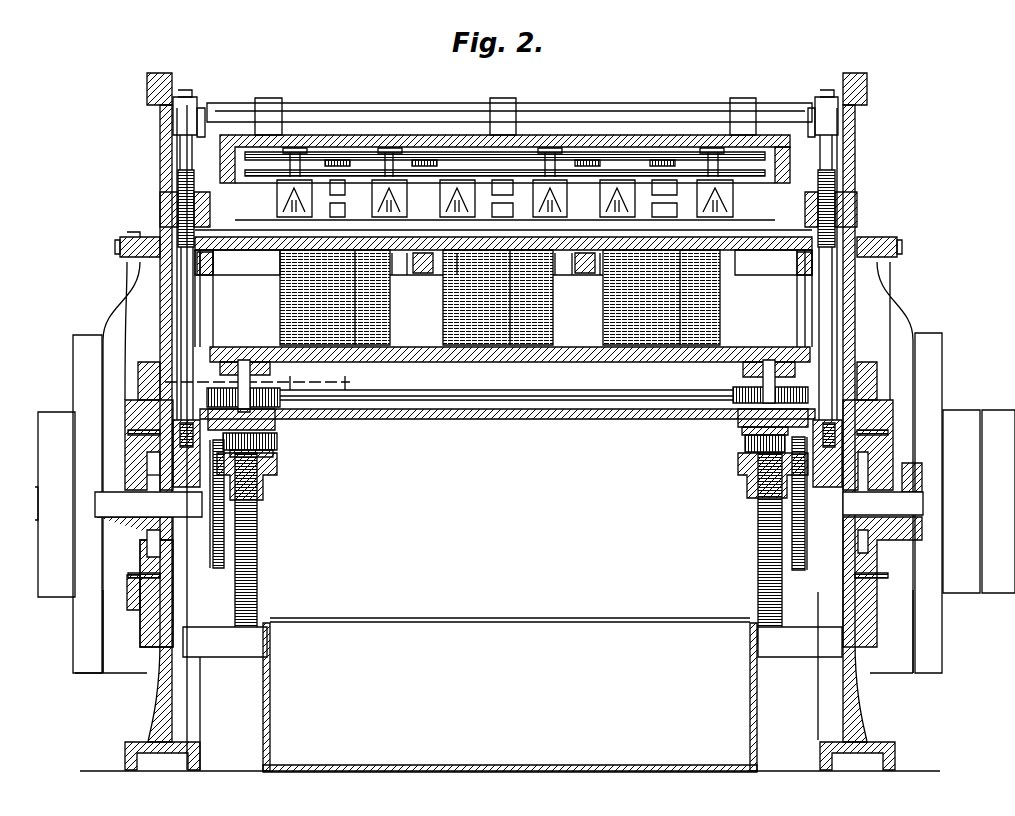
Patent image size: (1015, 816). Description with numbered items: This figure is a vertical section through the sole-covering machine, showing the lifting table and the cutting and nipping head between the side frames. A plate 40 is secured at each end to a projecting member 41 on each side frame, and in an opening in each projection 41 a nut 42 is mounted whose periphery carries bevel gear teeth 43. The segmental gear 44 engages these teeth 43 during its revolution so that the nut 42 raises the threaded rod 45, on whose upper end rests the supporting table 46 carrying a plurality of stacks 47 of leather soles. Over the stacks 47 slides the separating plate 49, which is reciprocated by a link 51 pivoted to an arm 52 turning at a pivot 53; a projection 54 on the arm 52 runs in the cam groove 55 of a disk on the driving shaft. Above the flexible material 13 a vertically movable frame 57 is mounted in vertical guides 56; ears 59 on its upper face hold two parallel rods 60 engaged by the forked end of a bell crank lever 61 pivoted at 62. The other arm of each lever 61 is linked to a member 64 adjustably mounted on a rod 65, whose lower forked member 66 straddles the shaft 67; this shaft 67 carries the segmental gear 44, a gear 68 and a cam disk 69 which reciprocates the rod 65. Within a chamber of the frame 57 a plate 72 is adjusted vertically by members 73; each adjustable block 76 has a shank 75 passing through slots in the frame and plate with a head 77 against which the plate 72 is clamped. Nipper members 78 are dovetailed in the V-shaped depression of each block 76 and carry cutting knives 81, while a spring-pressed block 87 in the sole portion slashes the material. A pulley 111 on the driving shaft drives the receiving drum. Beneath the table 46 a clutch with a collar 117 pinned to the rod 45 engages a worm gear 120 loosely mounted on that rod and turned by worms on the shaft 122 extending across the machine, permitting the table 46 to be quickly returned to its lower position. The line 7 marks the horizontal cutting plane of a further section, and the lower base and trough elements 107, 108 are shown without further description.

The cutting plane line 7— 7 is at (155, 360).
The flexible material 13 is at (255, 240).
The plate 40 is at (468, 420).
The projecting member 41 is at (278, 470).
The nut 42 is at (275, 453).
The bevel gear teeth 43 is at (278, 440).
The segmental gear 44 is at (226, 555).
The threaded rod 45 is at (258, 535).
The supporting table 46 is at (392, 362).
The stacks of leather soles 47 is at (280, 285).
The separating plate 49 is at (755, 250).
The link 51 is at (150, 237).
The arm 52 is at (128, 300).
The pivot 53 is at (216, 648).
The projection 54 is at (805, 550).
The cam groove 55 is at (920, 465).
The vertical guides 56 is at (78, 336).
The vertically movable frame 57 is at (578, 148).
The ears 59 is at (268, 100).
The parallel rods 60 is at (302, 102).
The bell crank lever 61 is at (186, 97).
The pivot 62 is at (204, 110).
The member 64 is at (170, 195).
The rod 65 is at (182, 300).
The forked member 66 is at (128, 595).
The shaft 67 is at (102, 505).
The gear 68 is at (128, 438).
The cam disk 69 is at (145, 378).
The plate 72 is at (340, 155).
The adjusting members 73 is at (248, 170).
The shank 75 is at (395, 160).
The adjustable block 76 is at (280, 188).
The head 77 is at (385, 150).
The nipper member 78 is at (466, 210).
The cutting knives 81 is at (282, 212).
The spring-pressed block 87 is at (346, 211).
The plate 107 is at (545, 616).
The trough 108 is at (510, 697).
The pulley 111 is at (45, 466).
The collar 117 is at (763, 388).
The worm gear 120 is at (320, 408).
The shaft 122 is at (458, 390).